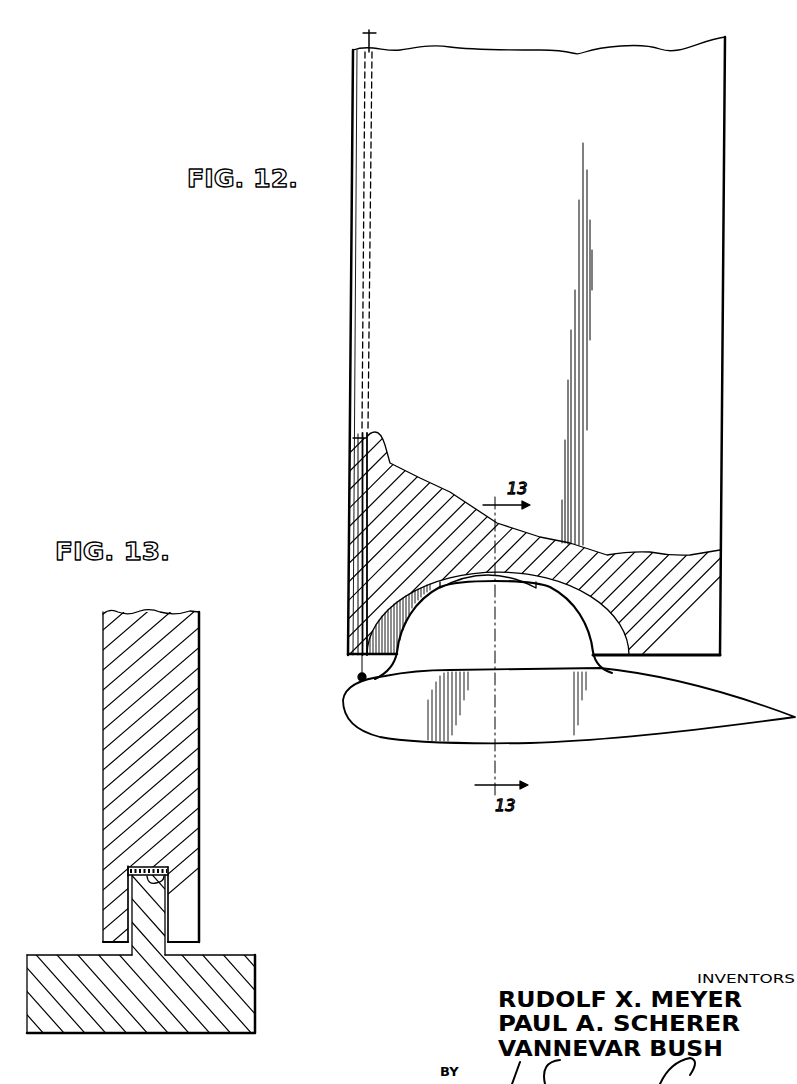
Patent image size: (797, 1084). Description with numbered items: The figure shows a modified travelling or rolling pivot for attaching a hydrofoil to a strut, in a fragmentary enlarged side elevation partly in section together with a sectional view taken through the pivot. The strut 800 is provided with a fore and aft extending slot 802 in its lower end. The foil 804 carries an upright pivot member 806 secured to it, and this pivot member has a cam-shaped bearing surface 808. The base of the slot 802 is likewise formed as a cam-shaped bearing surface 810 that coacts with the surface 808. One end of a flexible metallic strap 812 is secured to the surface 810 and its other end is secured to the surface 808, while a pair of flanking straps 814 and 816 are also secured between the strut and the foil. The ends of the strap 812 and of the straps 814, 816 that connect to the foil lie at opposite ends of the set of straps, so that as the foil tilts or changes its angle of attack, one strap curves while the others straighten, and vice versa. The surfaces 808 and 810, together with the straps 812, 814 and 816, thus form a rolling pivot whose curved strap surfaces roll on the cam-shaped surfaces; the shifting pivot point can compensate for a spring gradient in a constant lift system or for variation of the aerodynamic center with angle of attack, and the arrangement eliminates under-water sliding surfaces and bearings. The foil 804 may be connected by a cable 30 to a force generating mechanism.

In FIG. 12, the cable 30 is at (375, 41).
In FIG. 12, the strut 800 is at (710, 255).
In FIG. 13, the strut 800 is at (108, 724).
In FIG. 12, the slot 802 is at (380, 637).
In FIG. 13, the slot 802 is at (167, 915).
In FIG. 12, the foil 804 is at (634, 722).
In FIG. 12, the pivot member 806 is at (463, 640).
In FIG. 13, the pivot member 806 is at (153, 923).
In FIG. 12, the cam-shaped bearing surface 808 is at (587, 626).
In FIG. 13, the cam-shaped bearing surface 808 is at (166, 881).
In FIG. 12, the cam-shaped bearing surface 810 is at (630, 657).
In FIG. 13, the cam-shaped bearing surface 810 is at (149, 867).
In FIG. 12, the flexible metallic strap 812 is at (474, 585).
In FIG. 13, the flexible metallic strap 812 is at (146, 867).
In FIG. 12, the flanking strap 814 is at (512, 582).
In FIG. 13, the flanking strap 814 is at (167, 869).
In FIG. 13, the flanking strap 816 is at (128, 870).